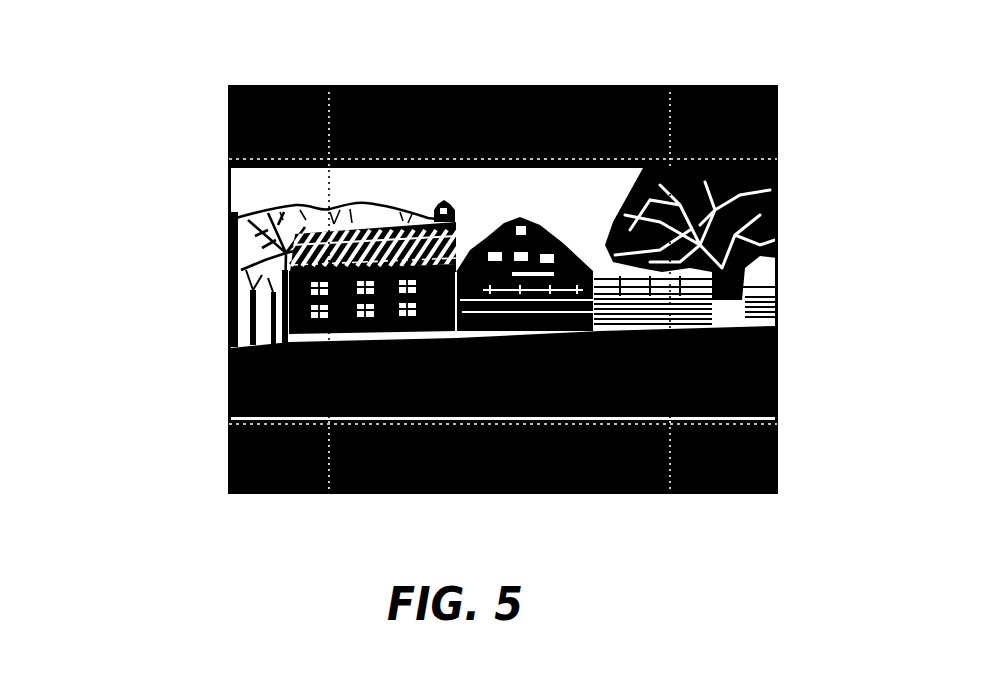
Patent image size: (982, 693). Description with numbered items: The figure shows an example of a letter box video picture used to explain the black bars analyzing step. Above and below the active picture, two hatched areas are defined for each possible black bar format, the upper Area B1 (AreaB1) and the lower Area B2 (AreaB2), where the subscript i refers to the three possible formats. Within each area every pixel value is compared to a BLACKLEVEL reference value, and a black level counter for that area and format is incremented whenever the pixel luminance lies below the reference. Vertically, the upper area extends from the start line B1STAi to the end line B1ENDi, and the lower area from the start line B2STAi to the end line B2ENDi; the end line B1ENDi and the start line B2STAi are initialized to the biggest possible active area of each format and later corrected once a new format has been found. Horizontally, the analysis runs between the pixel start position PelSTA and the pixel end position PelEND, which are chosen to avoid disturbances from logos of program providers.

The pixel start position PelSTA is at (329, 84).
The pixel end position PelEND is at (670, 84).
The start line of Area B1 B1STAi is at (227, 88).
The end line of Area B1 B1ENDi is at (227, 160).
The start line of Area B2 B2STAi is at (227, 423).
The end line of Area B2 B2ENDi is at (227, 492).
The Area B1 AreaB1 is at (503, 127).
The Area B2 AreaB2 is at (503, 457).